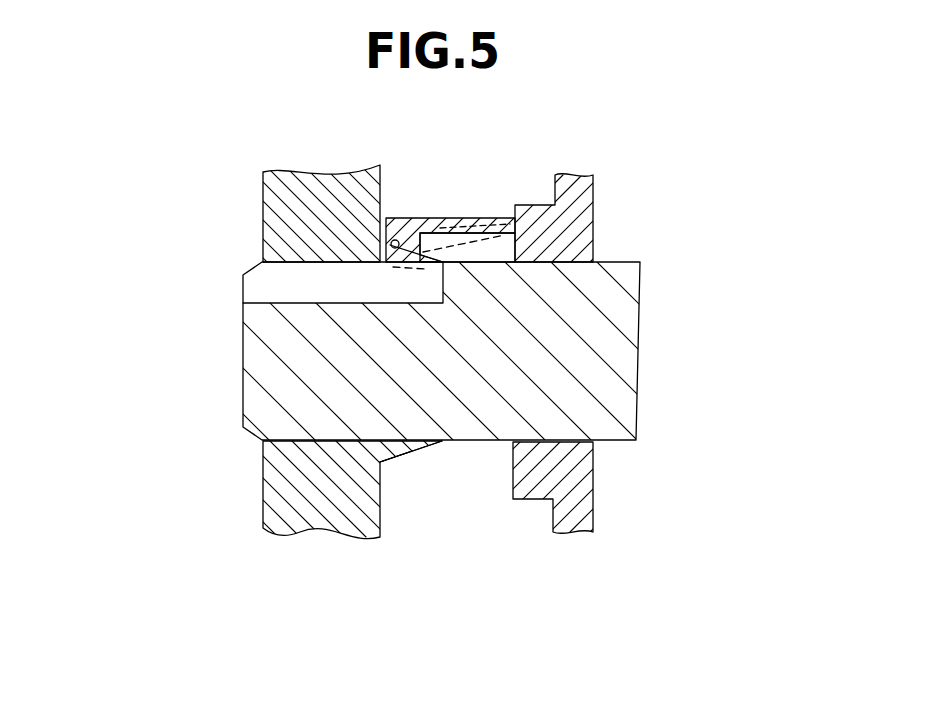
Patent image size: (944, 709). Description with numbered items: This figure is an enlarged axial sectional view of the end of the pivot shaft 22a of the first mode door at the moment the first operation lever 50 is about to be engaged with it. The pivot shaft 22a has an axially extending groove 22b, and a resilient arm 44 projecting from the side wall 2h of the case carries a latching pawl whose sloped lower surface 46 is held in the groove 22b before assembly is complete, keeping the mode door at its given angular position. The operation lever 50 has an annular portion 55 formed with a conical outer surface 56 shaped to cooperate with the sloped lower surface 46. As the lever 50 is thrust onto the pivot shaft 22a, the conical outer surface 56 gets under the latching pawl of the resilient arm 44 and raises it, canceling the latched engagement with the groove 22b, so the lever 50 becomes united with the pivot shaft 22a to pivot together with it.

The first operation lever 50 is at (268, 202).
The groove 22b is at (250, 290).
The pivot shaft 22a is at (625, 307).
The side wall 2h is at (593, 222).
The resilient arm 44 is at (462, 218).
The sloped lower surface 46 is at (393, 243).
The conical outer surface 56 is at (422, 448).
The annular portion 55 is at (395, 452).